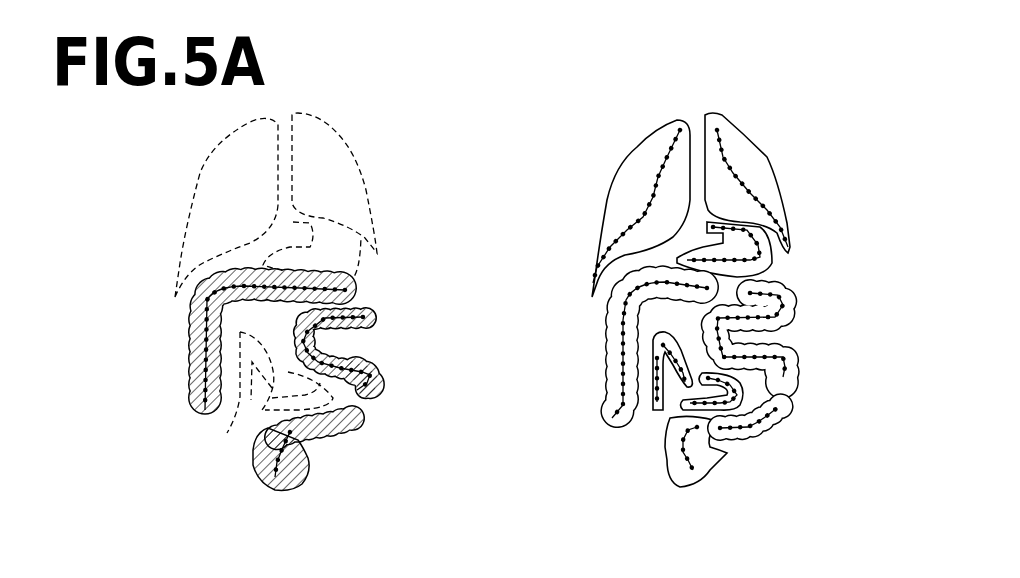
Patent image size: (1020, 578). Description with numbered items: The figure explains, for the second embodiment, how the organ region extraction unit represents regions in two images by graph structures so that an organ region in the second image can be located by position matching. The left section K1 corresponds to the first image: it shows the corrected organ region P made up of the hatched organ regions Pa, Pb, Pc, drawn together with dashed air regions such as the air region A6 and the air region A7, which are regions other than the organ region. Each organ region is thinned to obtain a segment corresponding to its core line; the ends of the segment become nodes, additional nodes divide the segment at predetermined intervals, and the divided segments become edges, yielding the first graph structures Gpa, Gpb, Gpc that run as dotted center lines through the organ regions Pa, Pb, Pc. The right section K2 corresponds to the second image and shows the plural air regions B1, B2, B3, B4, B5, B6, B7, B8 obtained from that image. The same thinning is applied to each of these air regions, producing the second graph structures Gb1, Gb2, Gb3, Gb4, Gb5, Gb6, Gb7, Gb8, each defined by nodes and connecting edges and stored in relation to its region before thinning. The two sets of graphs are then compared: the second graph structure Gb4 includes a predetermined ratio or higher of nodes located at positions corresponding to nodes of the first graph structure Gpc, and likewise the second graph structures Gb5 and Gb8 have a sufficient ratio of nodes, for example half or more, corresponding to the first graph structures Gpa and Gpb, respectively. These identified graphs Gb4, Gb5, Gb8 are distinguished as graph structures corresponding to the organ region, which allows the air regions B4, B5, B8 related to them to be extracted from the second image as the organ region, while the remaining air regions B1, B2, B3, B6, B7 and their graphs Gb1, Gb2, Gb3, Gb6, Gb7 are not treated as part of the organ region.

The section illustrating the first image K1 is at (365, 120).
The section illustrating the second image K2 is at (778, 119).
The organ region Pc is at (189, 363).
The first graph structure Gpc is at (203, 321).
The organ region Pa is at (374, 318).
The first graph structure Gpa is at (383, 374).
The organ region Pb is at (352, 428).
The first graph structure Gpb is at (288, 474).
The air region A6 is at (227, 433).
The air region A7 is at (268, 410).
The air region B1 is at (606, 200).
The second graph structure Gb1 is at (656, 168).
The air region B2 is at (780, 182).
The second graph structure Gb2 is at (782, 228).
The air region B3 is at (773, 263).
The second graph structure Gb3 is at (767, 273).
The air region B4 is at (605, 314).
The second graph structure Gb4 is at (622, 338).
The air region B5 is at (798, 366).
The second graph structure Gb5 is at (793, 310).
The air region B6 is at (680, 408).
The second graph structure Gb6 is at (660, 388).
The air region B7 is at (673, 412).
The second graph structure Gb7 is at (720, 406).
The air region B8 is at (770, 430).
The second graph structure Gb8 is at (762, 428).